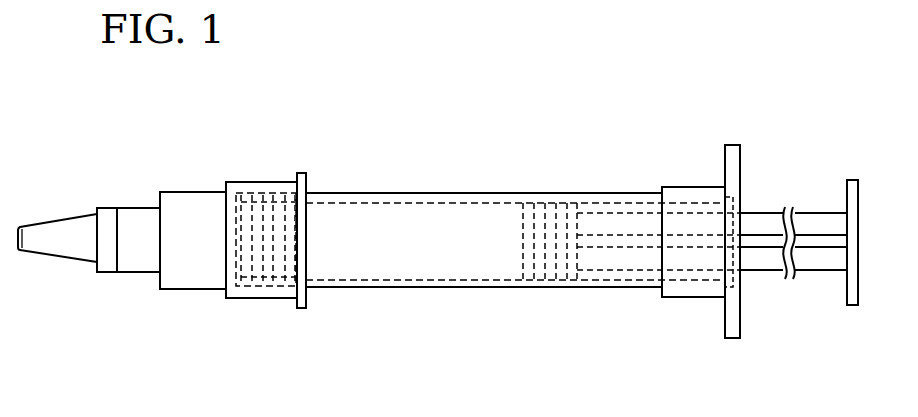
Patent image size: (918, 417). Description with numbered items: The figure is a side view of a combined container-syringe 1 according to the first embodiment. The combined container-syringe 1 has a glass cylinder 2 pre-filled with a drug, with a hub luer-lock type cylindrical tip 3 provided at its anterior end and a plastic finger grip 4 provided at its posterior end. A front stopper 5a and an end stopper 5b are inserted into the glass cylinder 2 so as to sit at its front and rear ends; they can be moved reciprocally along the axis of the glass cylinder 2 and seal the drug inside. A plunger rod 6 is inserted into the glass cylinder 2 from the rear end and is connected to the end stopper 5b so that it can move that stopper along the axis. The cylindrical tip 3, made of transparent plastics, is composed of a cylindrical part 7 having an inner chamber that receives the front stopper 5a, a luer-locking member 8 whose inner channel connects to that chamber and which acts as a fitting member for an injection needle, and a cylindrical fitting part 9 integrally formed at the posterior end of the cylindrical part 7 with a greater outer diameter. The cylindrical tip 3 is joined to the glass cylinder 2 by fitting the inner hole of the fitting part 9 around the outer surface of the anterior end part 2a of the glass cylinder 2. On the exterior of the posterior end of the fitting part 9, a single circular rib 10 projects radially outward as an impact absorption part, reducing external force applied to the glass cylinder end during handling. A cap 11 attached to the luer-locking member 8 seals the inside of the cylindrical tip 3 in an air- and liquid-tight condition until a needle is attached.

The combined container-syringe 1 is at (517, 150).
The glass cylinder 2 is at (432, 193).
The anterior end part of the glass cylinder 2a is at (265, 297).
The cylindrical tip 3 is at (217, 182).
The finger grip 4 is at (741, 160).
The front stopper 5a is at (270, 286).
The end stopper 5b is at (553, 281).
The plunger rod 6 is at (813, 213).
The cylindrical part 7 is at (192, 290).
The luer-locking member 8 is at (140, 272).
The cylindrical fitting part 9 is at (258, 182).
The circular rib 10 is at (303, 173).
The cap 11 is at (72, 213).